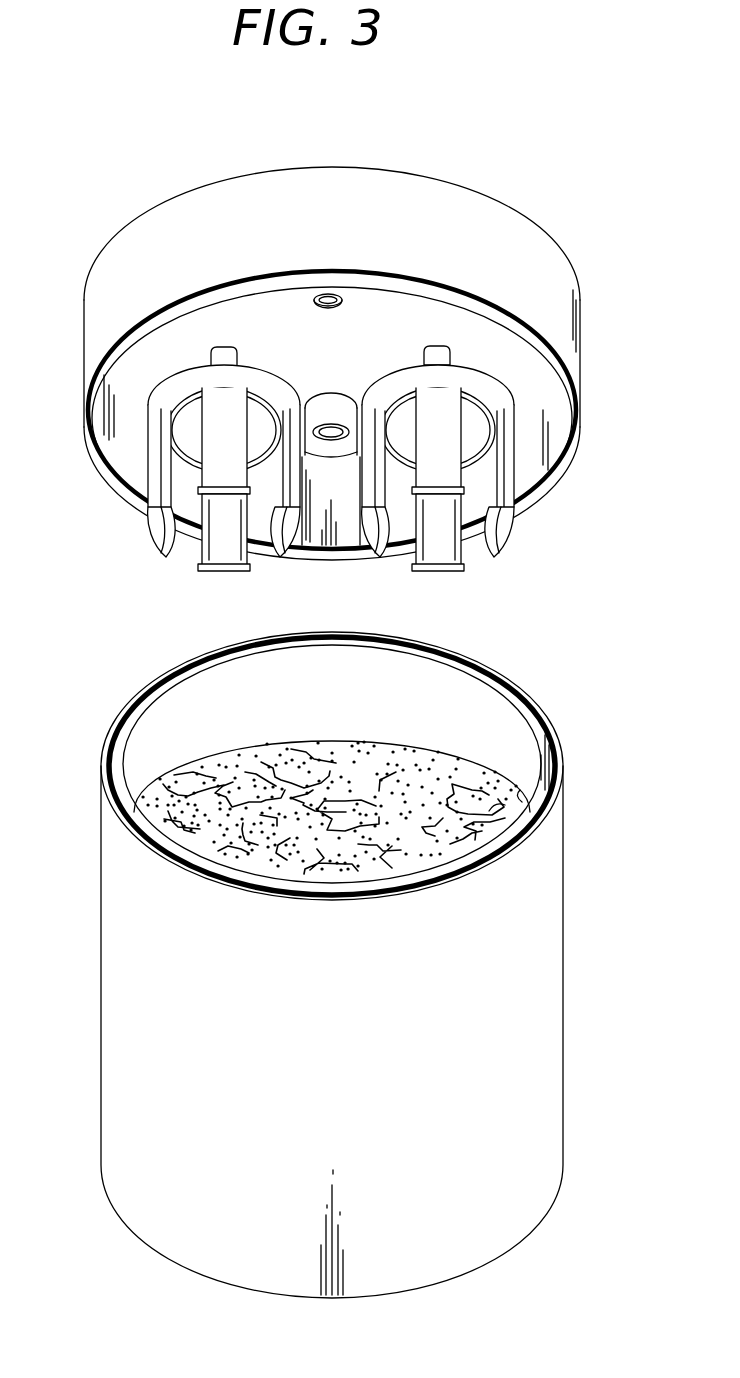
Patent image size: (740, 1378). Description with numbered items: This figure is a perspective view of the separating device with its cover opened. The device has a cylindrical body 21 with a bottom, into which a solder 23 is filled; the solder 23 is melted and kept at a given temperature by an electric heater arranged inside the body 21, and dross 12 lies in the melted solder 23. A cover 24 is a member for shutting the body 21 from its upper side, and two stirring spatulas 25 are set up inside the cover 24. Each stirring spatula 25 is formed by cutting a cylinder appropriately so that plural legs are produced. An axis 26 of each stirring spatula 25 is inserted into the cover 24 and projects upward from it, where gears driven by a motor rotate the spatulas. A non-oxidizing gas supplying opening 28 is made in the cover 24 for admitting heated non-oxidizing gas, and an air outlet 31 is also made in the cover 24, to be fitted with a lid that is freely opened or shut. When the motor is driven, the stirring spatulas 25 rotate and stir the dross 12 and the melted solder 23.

The dross 12 is at (302, 758).
The cylindrical body 21 is at (548, 874).
The solder 23 is at (433, 757).
The cover 24 is at (568, 330).
The stirring spatula 25 is at (149, 538).
The axis 26 is at (225, 347).
The non-oxidizing gas supplying opening 28 is at (336, 392).
The air outlet 31 is at (330, 296).